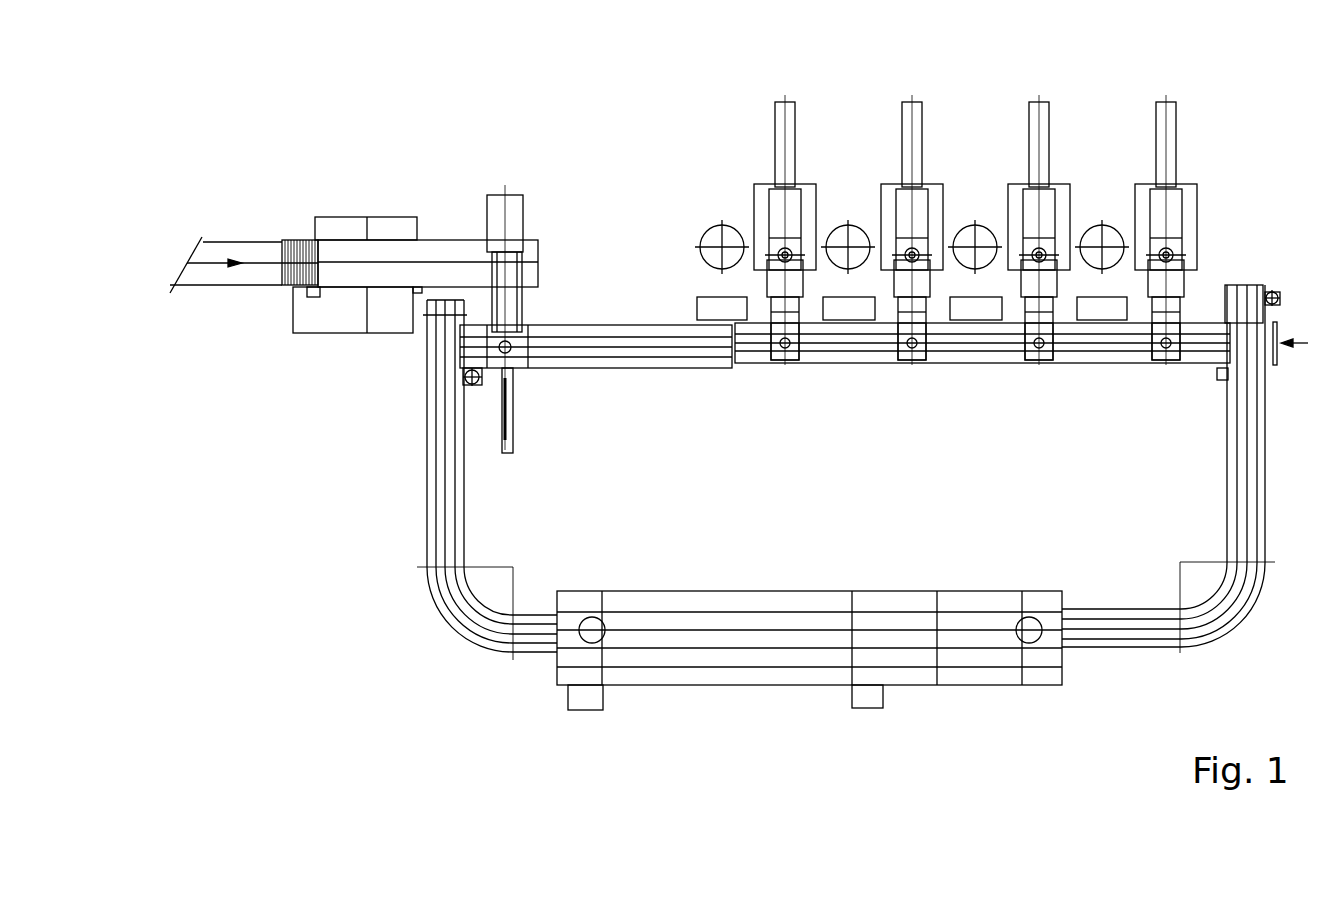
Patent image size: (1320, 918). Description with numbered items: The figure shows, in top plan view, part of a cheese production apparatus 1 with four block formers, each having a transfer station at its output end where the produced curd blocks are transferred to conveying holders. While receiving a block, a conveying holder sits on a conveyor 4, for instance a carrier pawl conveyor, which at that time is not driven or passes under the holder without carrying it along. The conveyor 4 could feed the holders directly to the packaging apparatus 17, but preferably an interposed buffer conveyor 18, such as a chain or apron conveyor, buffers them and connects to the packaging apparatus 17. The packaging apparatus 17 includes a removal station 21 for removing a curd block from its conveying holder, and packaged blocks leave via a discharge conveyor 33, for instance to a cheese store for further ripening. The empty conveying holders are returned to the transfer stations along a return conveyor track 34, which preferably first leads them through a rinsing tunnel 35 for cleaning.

The cheese production apparatus 1 is at (1263, 177).
The conveyor 4 is at (850, 355).
The packaging apparatus 17 is at (398, 190).
The buffer conveyor 18 is at (623, 362).
The removal station 21 is at (541, 212).
The discharge conveyor 33 is at (230, 285).
The return conveyor track 34 is at (1225, 618).
The rinsing tunnel 35 is at (962, 600).